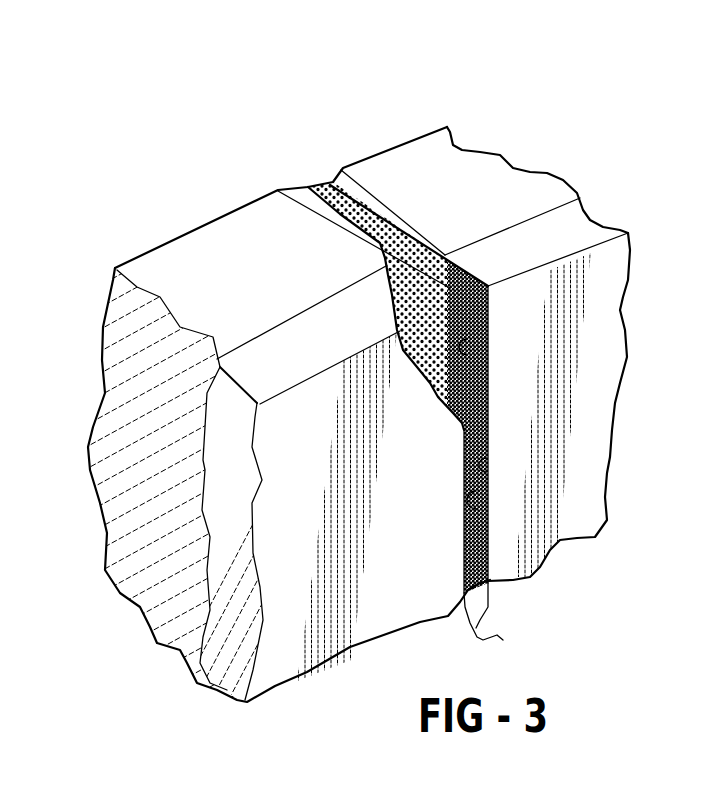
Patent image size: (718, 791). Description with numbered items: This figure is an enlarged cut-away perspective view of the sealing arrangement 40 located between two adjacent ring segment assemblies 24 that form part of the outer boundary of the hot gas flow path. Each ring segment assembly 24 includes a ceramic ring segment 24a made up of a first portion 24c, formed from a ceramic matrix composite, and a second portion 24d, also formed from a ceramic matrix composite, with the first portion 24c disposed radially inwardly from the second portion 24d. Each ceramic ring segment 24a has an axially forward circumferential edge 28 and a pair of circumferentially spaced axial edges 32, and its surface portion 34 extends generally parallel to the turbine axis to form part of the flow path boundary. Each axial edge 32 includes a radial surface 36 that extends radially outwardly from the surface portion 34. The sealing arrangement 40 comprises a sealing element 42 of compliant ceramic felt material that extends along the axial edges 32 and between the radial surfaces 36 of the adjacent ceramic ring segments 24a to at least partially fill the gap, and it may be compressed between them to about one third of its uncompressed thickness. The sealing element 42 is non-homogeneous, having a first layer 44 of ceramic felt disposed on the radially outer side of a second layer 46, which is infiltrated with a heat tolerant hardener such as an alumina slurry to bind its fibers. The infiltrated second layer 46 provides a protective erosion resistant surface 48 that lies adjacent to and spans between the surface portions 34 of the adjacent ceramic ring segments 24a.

The ring segment assembly 24 is at (600, 183).
The ceramic ring segment 24a is at (255, 378).
The first portion 24c is at (237, 360).
The second portion 24d is at (228, 267).
The axially forward circumferential edge 28 is at (331, 367).
The axial edge 32 is at (487, 473).
The surface portion 34 is at (294, 613).
The radial surface 36 is at (443, 251).
The sealing arrangement 40 is at (483, 640).
The sealing element 42 is at (474, 265).
The first layer 44 is at (443, 256).
The second layer 46 is at (490, 353).
The protective erosion resistant surface 48 is at (488, 530).